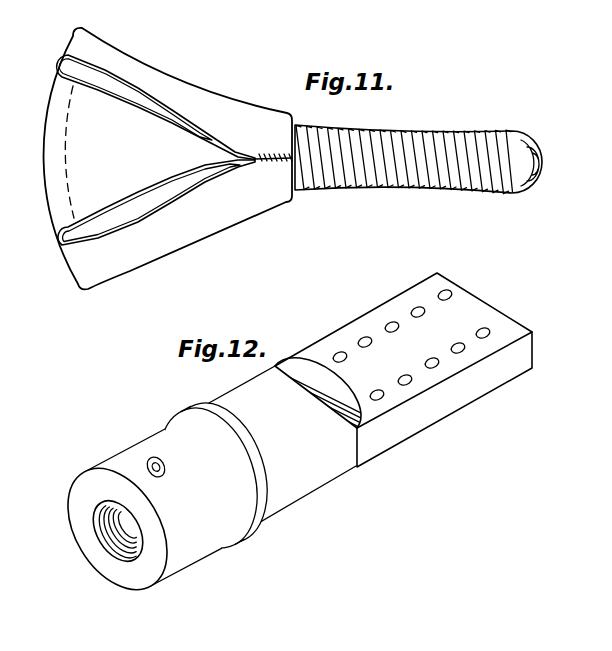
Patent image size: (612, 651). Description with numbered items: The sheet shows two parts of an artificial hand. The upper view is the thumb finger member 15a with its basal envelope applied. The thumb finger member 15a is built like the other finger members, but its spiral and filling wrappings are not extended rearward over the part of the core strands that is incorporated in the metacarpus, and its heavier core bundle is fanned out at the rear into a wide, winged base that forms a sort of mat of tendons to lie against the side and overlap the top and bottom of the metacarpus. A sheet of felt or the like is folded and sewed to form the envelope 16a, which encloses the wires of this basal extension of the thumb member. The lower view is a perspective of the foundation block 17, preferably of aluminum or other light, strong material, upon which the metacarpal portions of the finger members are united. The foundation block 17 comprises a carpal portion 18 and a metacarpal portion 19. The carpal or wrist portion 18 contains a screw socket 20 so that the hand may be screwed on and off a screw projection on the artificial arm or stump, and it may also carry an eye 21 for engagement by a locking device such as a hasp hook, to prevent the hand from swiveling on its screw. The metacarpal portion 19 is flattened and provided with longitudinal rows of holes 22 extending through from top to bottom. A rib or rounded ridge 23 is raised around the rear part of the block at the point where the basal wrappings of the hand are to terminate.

In FIG. 11, the thumb finger member 15a is at (405, 127).
In FIG. 11, the envelope 16a is at (187, 82).
In FIG. 12, the foundation block 17 is at (293, 350).
In FIG. 12, the carpal portion 18 is at (125, 445).
In FIG. 12, the metacarpal portion 19 is at (403, 290).
In FIG. 12, the screw socket 20 is at (113, 543).
In FIG. 12, the eye 21 is at (167, 468).
In FIG. 12, the holes 22 is at (424, 331).
In FIG. 12, the rib 23 is at (262, 472).